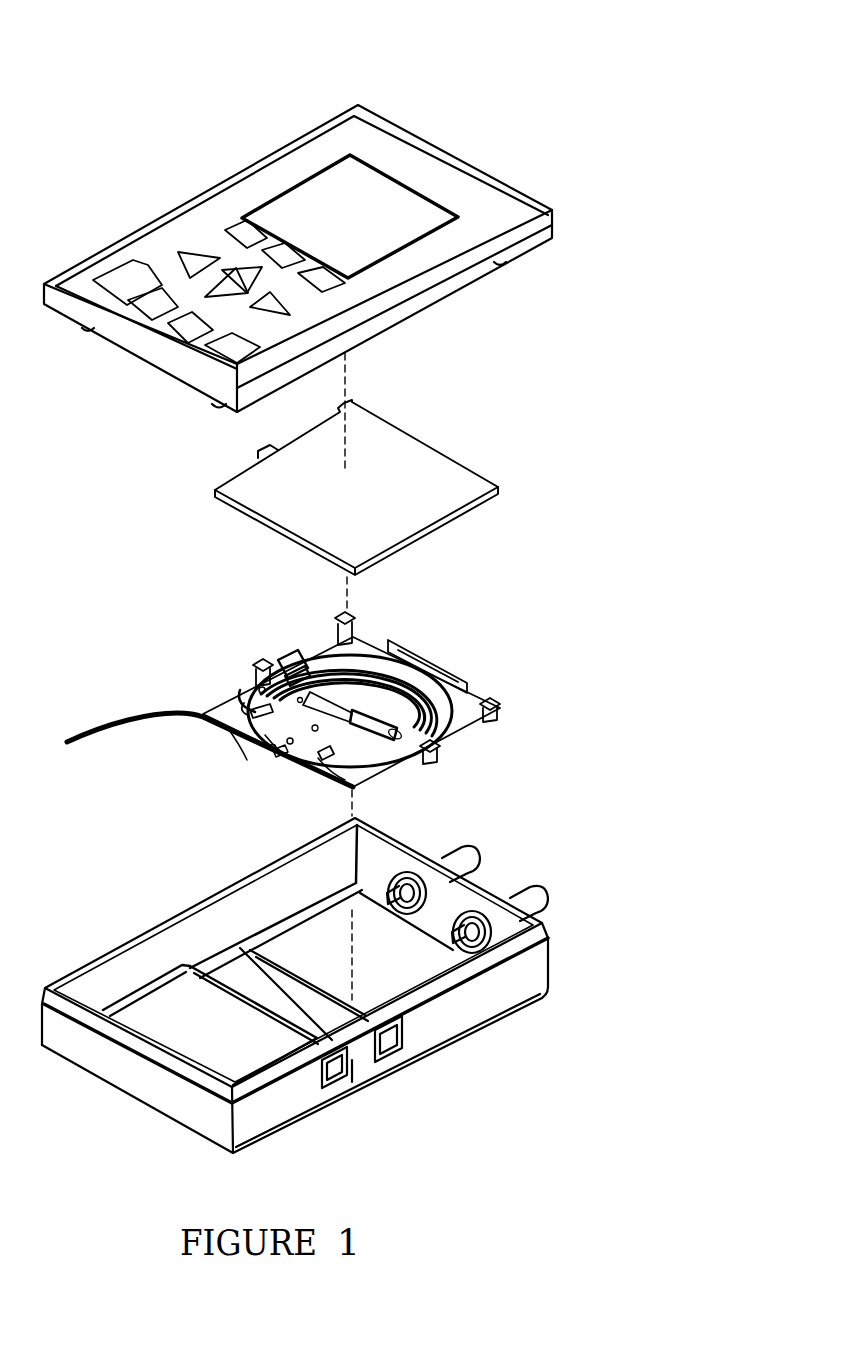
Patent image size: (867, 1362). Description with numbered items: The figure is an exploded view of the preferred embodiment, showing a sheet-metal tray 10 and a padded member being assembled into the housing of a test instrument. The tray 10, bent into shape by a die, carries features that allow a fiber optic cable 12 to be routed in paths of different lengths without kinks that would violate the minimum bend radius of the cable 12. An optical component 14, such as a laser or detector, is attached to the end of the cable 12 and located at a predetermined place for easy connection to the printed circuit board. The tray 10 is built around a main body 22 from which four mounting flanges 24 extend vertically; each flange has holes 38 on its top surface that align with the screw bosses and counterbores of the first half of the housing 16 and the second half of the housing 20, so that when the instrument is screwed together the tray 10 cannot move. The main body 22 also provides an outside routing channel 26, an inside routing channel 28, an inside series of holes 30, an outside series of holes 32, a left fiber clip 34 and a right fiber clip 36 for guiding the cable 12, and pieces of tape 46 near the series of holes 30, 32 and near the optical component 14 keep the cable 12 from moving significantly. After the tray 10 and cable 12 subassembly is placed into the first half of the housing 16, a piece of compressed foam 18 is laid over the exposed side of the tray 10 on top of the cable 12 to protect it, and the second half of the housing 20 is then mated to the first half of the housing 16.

The tray 10 is at (467, 661).
The fiber optic cable 12 is at (127, 720).
The optical component 14 is at (363, 727).
The first half of the housing 16 is at (437, 115).
The compressed foam 18 is at (460, 480).
The second half of the housing 20 is at (540, 982).
The main body 22 is at (463, 730).
The mounting flanges 24 is at (353, 623).
The outside routing channel 26 is at (370, 657).
The inside routing channel 28 is at (293, 660).
The inside series of holes 30 is at (260, 687).
The outside series of holes 32 is at (213, 720).
The left fiber clip 34 is at (292, 663).
The right fiber clip 36 is at (450, 693).
The holes 38 is at (263, 657).
The tape 46 is at (258, 683).